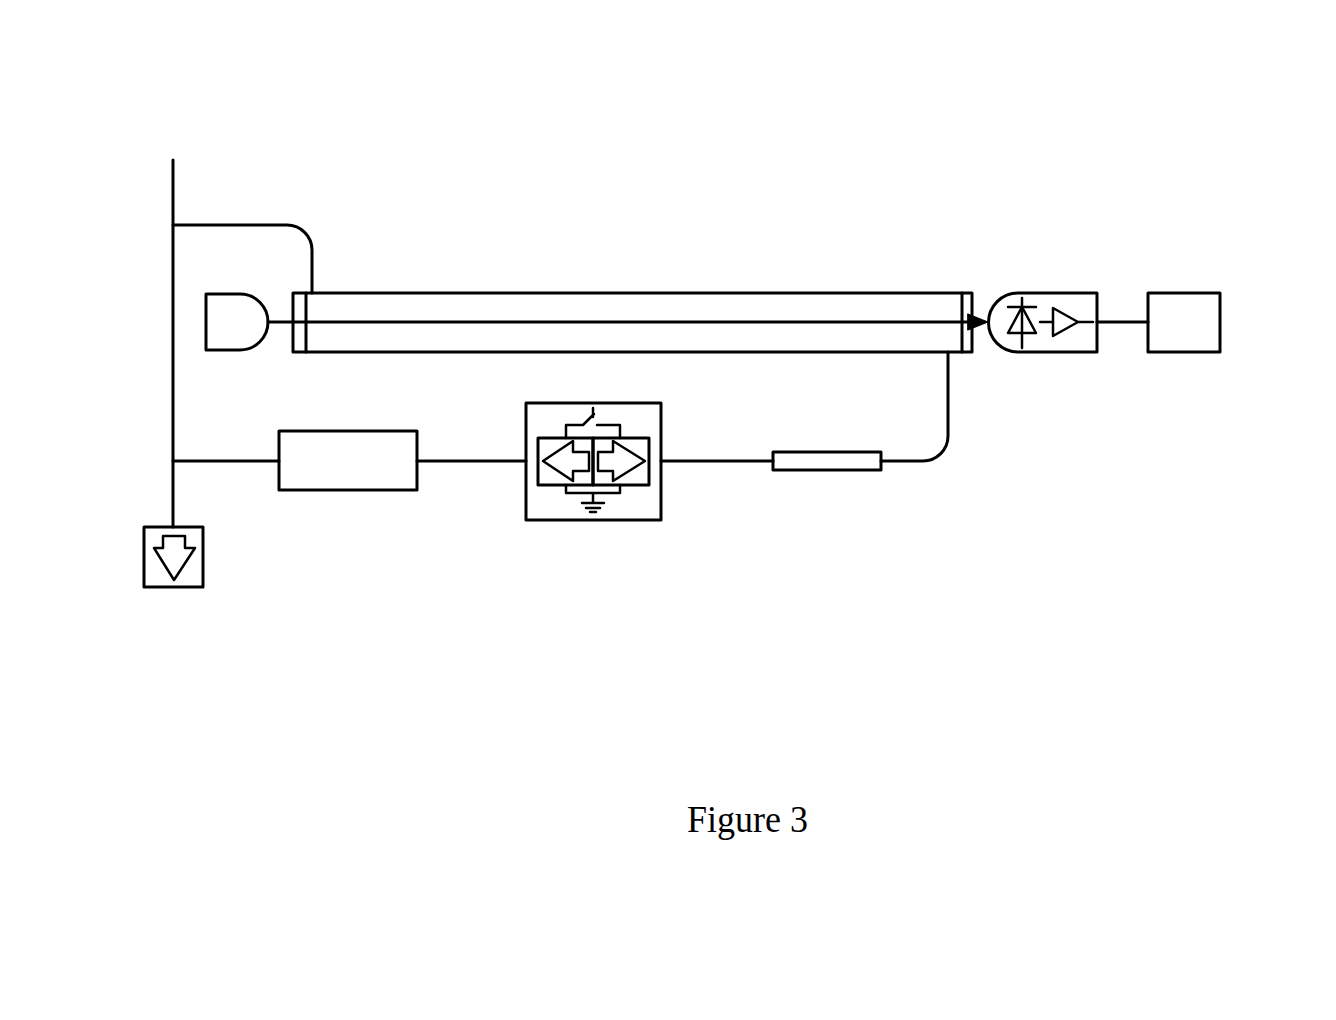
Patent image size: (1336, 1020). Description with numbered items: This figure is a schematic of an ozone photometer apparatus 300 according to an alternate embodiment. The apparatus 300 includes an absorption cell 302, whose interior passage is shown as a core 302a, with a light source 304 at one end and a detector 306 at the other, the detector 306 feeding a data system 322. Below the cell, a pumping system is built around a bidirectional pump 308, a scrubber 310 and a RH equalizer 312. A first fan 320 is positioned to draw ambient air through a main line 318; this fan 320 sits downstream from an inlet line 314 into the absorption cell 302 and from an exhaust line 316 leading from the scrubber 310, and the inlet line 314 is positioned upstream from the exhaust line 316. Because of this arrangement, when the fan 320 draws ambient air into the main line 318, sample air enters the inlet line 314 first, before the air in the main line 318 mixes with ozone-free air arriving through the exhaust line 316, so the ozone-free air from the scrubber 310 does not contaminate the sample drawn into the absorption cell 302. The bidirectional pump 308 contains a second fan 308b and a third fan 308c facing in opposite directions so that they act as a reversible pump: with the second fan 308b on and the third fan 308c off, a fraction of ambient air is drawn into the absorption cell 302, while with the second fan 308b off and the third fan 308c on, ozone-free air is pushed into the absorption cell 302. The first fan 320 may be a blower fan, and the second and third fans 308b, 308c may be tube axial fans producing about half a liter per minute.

The ozone photometer apparatus 300 is at (584, 92).
The absorption cell 302 is at (437, 293).
The fiber core 302a is at (580, 300).
The light source 304 is at (220, 345).
The detector 306 is at (1032, 293).
The bidirectional pump 308 is at (572, 495).
The second fan 308b is at (550, 477).
The third fan 308c is at (638, 477).
The scrubber 310 is at (358, 490).
The RH equalizer 312 is at (822, 470).
The inlet line 314 is at (255, 225).
The exhaust line 316 is at (933, 458).
The main line 318 is at (173, 177).
The first fan 320 is at (198, 585).
The data system 322 is at (1180, 293).